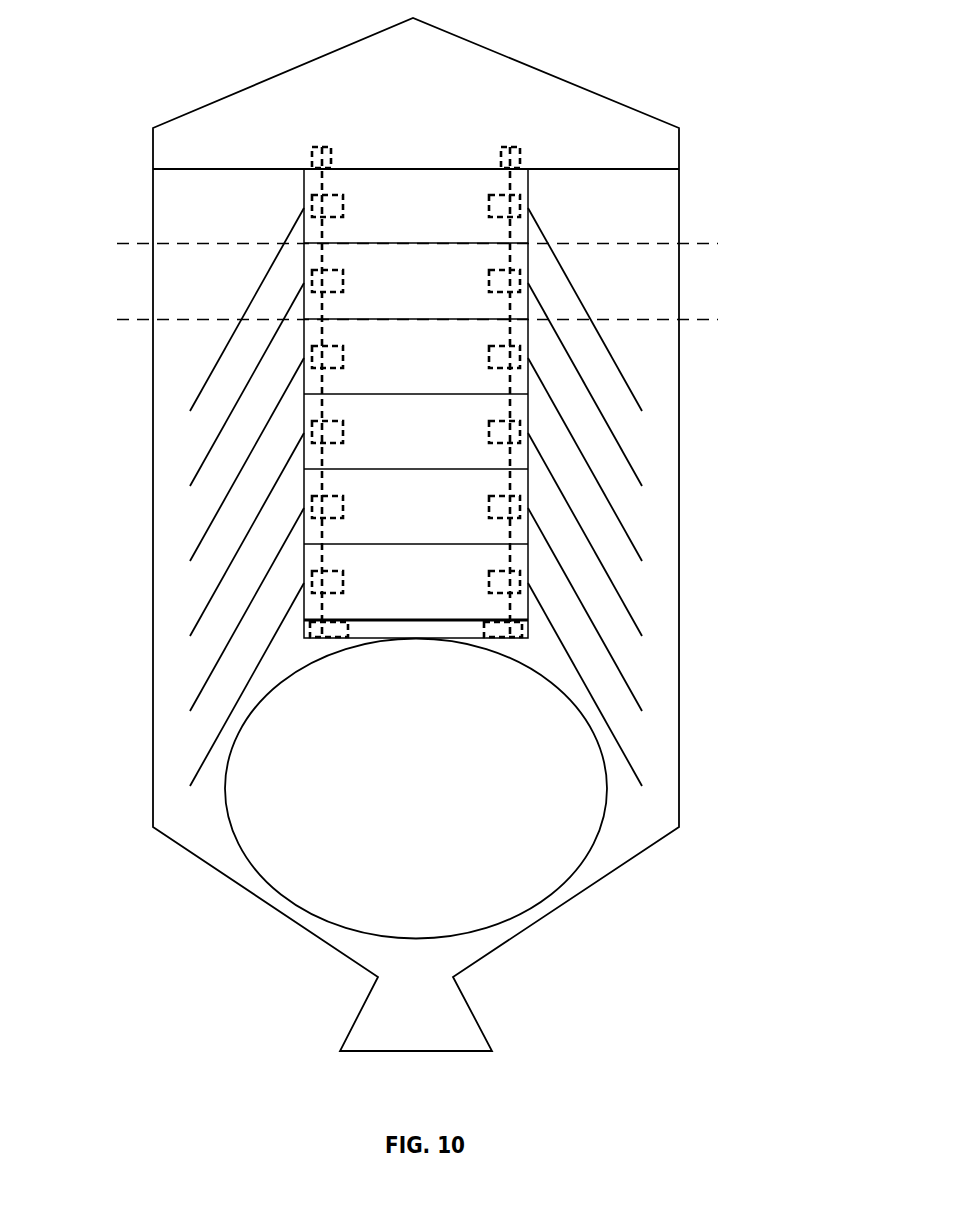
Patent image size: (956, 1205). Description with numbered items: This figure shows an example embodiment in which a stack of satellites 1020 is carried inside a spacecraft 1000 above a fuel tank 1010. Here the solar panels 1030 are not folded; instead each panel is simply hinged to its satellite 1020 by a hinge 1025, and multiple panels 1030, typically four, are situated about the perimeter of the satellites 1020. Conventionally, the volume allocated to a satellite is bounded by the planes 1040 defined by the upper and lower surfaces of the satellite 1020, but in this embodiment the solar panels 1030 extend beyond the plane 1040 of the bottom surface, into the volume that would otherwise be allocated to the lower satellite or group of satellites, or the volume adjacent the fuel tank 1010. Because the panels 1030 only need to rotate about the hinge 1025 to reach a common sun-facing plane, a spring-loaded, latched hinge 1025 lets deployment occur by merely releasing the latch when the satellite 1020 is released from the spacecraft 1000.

The spacecraft 1000 is at (717, 93).
The fuel tank 1010 is at (551, 770).
The satellite 1020 is at (398, 287).
The hinge 1025 is at (528, 283).
The solar panel 1030 is at (253, 375).
The plane 1040 is at (697, 244).